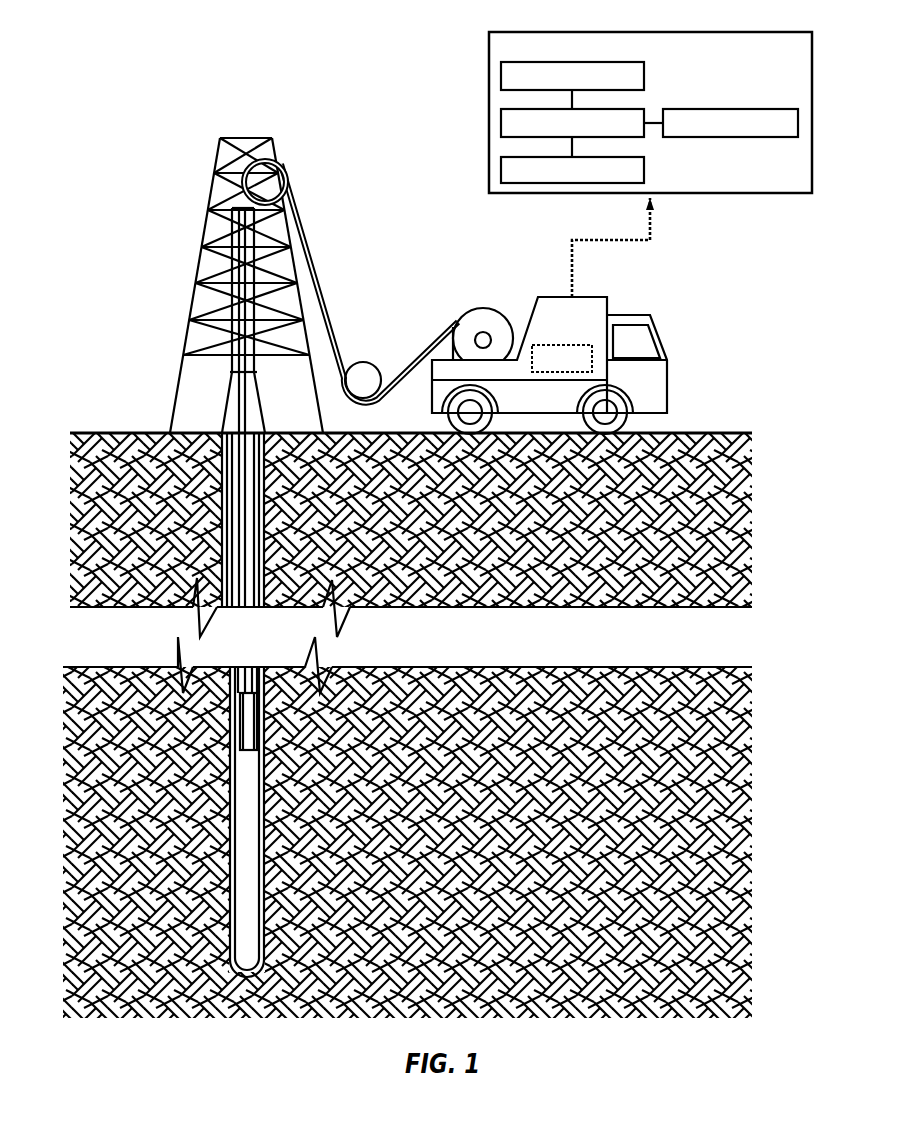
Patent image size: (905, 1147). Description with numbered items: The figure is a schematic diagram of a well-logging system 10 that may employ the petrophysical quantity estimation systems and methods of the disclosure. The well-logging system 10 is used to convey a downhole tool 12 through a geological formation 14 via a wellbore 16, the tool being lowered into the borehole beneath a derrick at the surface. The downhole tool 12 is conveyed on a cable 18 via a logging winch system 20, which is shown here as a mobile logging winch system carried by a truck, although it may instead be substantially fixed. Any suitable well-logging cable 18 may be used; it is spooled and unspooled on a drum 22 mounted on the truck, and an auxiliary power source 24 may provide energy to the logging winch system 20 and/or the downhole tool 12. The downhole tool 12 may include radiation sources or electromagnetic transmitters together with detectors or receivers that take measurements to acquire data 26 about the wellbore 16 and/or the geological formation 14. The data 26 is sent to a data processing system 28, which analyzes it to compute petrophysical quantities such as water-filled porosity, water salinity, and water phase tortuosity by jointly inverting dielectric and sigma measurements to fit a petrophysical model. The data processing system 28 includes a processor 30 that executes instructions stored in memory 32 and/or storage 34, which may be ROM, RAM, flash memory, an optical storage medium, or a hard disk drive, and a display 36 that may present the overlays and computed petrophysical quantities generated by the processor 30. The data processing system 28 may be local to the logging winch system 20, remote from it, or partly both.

The well-logging system 10 is at (106, 173).
The downhole tool 12 is at (240, 703).
The geological formation 14 is at (88, 762).
The wellbore 16 is at (213, 482).
The cable 18 is at (330, 276).
The logging winch system 20 is at (549, 328).
The drum 22 is at (482, 310).
The auxiliary power source 24 is at (575, 335).
The data 26 is at (651, 216).
The data processing system 28 is at (629, 102).
The processor 30 is at (622, 109).
The memory 32 is at (501, 75).
The storage 34 is at (640, 169).
The display 36 is at (732, 108).